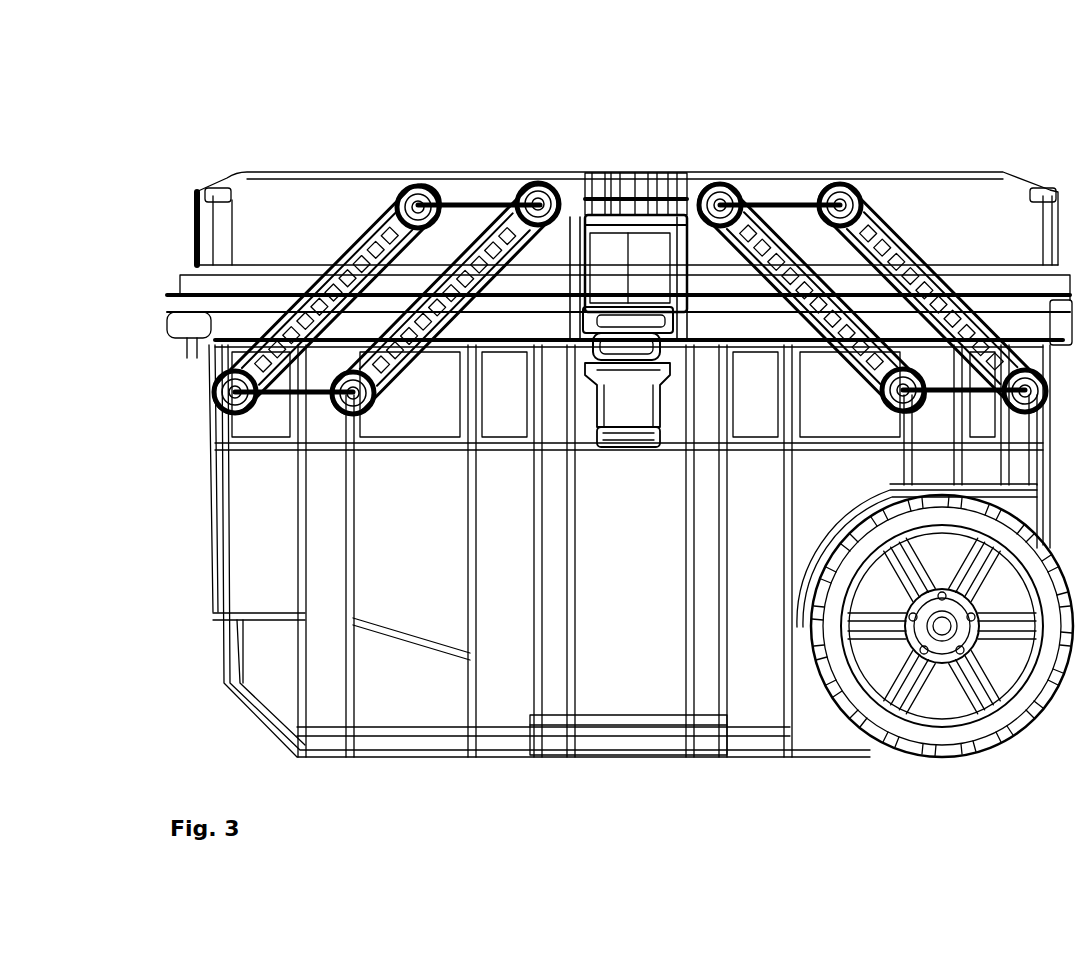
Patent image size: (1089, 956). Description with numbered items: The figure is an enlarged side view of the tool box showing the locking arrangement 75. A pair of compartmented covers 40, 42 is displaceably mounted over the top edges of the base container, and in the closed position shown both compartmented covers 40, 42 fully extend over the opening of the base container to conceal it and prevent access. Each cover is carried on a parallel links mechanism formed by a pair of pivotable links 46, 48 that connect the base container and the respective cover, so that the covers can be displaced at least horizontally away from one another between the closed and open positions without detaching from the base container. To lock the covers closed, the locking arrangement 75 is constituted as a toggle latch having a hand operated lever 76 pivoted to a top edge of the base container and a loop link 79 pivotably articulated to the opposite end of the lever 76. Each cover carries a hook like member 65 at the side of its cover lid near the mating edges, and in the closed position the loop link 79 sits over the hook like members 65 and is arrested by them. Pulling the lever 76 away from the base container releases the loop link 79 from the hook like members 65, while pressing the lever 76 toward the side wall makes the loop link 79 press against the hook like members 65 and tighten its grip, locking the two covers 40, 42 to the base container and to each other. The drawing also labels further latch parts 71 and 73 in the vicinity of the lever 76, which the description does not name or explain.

The compartmented cover 40 is at (325, 135).
The compartmented cover 42 is at (629, 231).
The pivotable link 46 is at (558, 180).
The pivotable link 48 is at (419, 185).
The hook like member 65 is at (660, 228).
The latch bar 71 is at (615, 322).
The catch foot 73 is at (642, 437).
The locking arrangement 75 is at (643, 255).
The hand operated lever 76 is at (620, 403).
The loop link 79 is at (690, 197).